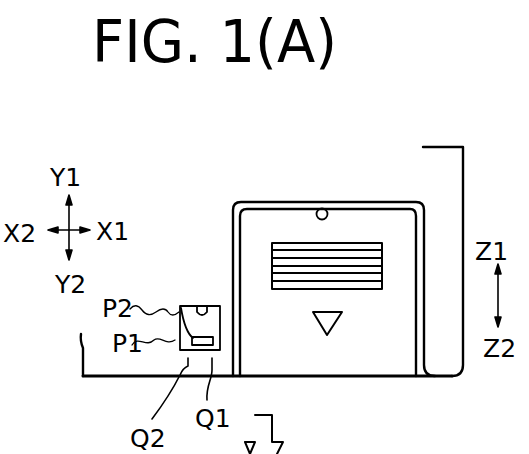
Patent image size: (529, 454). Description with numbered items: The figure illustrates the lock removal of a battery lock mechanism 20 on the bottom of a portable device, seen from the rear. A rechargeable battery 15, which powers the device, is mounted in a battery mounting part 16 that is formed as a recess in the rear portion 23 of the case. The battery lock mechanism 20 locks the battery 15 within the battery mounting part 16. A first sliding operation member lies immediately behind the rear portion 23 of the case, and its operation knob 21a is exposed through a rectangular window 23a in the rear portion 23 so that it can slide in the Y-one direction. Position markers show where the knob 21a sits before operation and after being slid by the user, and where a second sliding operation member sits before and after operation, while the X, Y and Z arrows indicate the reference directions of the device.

The rechargeable battery 15 is at (350, 360).
The battery mounting part 16 is at (318, 208).
The battery lock mechanism 20 is at (180, 285).
The operation knob 21a is at (181, 309).
The rear portion of the case 23 is at (450, 174).
The rectangular window 23a is at (203, 306).